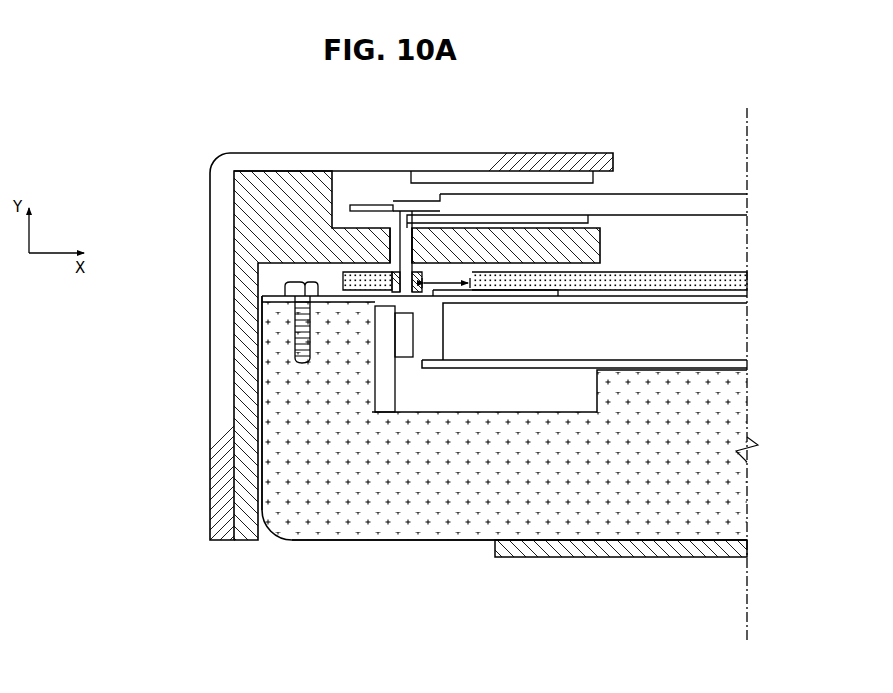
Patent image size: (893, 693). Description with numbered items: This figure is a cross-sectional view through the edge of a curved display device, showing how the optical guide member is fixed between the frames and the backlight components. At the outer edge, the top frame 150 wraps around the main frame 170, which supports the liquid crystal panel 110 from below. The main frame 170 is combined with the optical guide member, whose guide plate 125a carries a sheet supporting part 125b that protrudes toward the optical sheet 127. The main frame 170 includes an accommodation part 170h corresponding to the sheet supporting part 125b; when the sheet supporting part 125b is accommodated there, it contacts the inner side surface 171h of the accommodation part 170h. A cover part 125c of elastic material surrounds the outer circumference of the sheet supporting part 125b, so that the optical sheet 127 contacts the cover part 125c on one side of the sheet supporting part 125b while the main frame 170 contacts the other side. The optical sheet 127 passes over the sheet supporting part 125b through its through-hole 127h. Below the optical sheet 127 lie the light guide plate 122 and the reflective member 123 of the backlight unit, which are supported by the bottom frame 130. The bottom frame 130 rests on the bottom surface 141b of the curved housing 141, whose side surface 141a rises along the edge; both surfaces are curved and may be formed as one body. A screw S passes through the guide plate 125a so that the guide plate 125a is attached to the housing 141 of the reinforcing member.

The liquid crystal panel 110 is at (737, 206).
The light guide plate 122 is at (740, 330).
The reflective member 123 is at (745, 367).
The guide plate 125a is at (510, 296).
The sheet supporting part 125b is at (372, 212).
The cover part 125c is at (357, 209).
The optical sheet 127 is at (747, 283).
The through-hole 127h is at (460, 272).
The bottom frame 130 is at (633, 502).
The housing 141 is at (185, 644).
The side surface 141a is at (298, 381).
The bottom surface 141b is at (430, 490).
The top frame 150 is at (210, 225).
The main frame 170 is at (285, 188).
The accommodation part 170h is at (396, 226).
The inner side surface 171h is at (437, 215).
The screw S is at (283, 284).